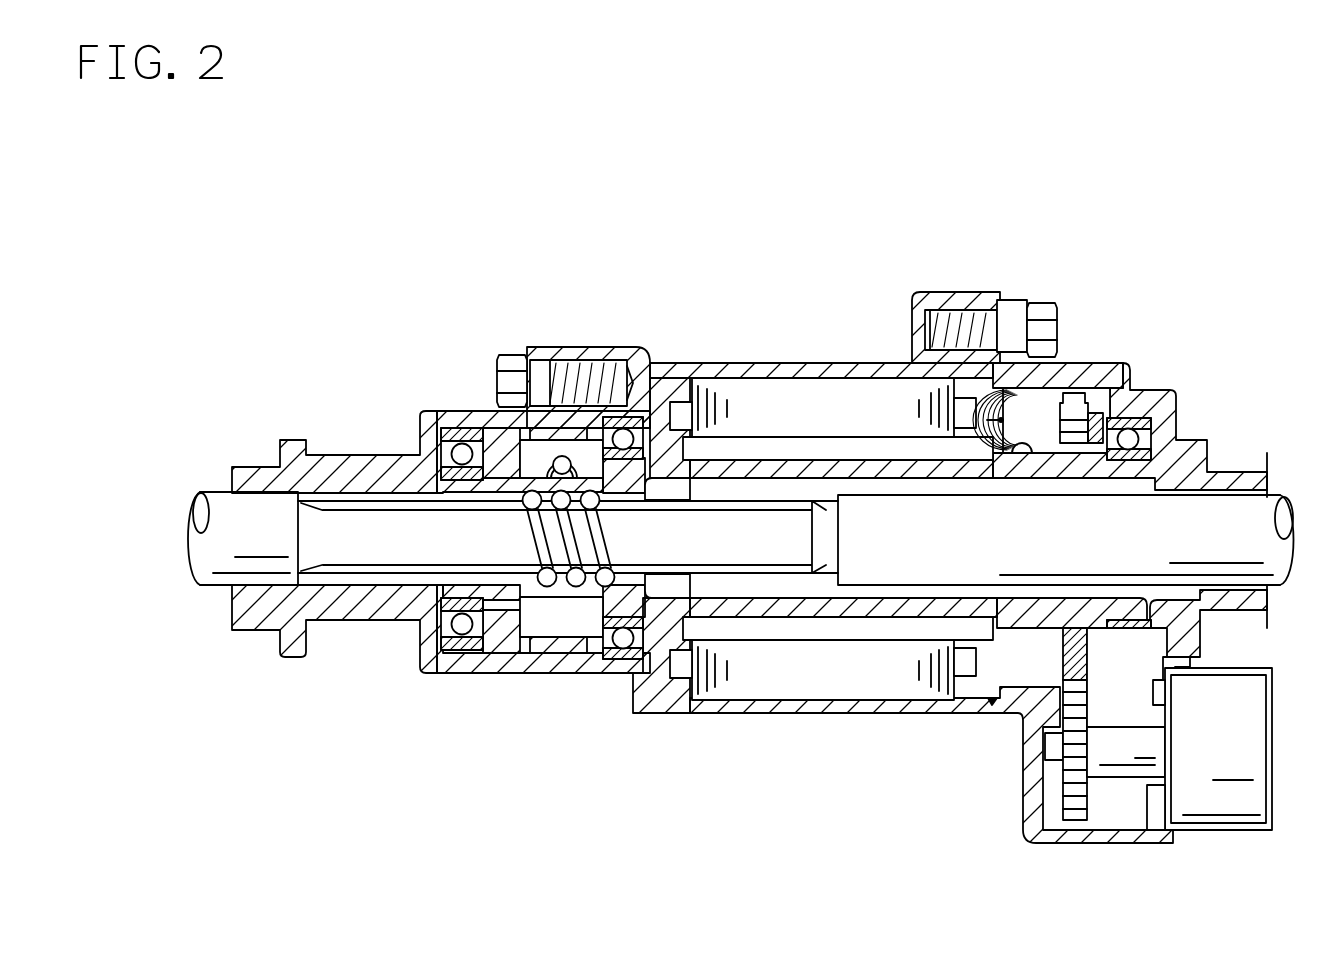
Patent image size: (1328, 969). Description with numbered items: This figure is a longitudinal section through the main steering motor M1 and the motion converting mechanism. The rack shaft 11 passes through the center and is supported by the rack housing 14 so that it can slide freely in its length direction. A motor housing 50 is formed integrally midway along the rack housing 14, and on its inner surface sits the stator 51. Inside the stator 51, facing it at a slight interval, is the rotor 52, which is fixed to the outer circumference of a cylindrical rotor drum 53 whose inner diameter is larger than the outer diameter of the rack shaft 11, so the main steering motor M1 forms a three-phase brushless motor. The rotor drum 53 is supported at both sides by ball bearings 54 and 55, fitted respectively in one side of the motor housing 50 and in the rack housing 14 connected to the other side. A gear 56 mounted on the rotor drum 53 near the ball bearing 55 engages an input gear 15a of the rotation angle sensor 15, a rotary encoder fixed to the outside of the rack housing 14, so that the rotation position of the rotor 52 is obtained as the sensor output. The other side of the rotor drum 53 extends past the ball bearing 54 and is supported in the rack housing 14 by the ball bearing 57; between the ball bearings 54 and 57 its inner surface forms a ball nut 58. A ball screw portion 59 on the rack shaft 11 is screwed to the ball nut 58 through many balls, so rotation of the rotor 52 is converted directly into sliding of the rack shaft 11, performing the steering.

The rack shaft 11 is at (1278, 497).
The rack housing 14 is at (370, 468).
The rotation angle sensor 15 is at (1220, 806).
The input gear 15a is at (1068, 789).
The motor housing 50 is at (759, 366).
The stator 51 is at (790, 690).
The rotor 52 is at (767, 632).
The rotor drum 53 is at (862, 609).
The ball bearing 54 is at (633, 420).
The ball bearing 55 is at (1134, 424).
The gear 56 is at (1075, 392).
The ball bearing 57 is at (462, 440).
The ball nut 58 is at (494, 602).
The ball screw portion 59 is at (365, 555).
The main steering motor M1 is at (817, 338).